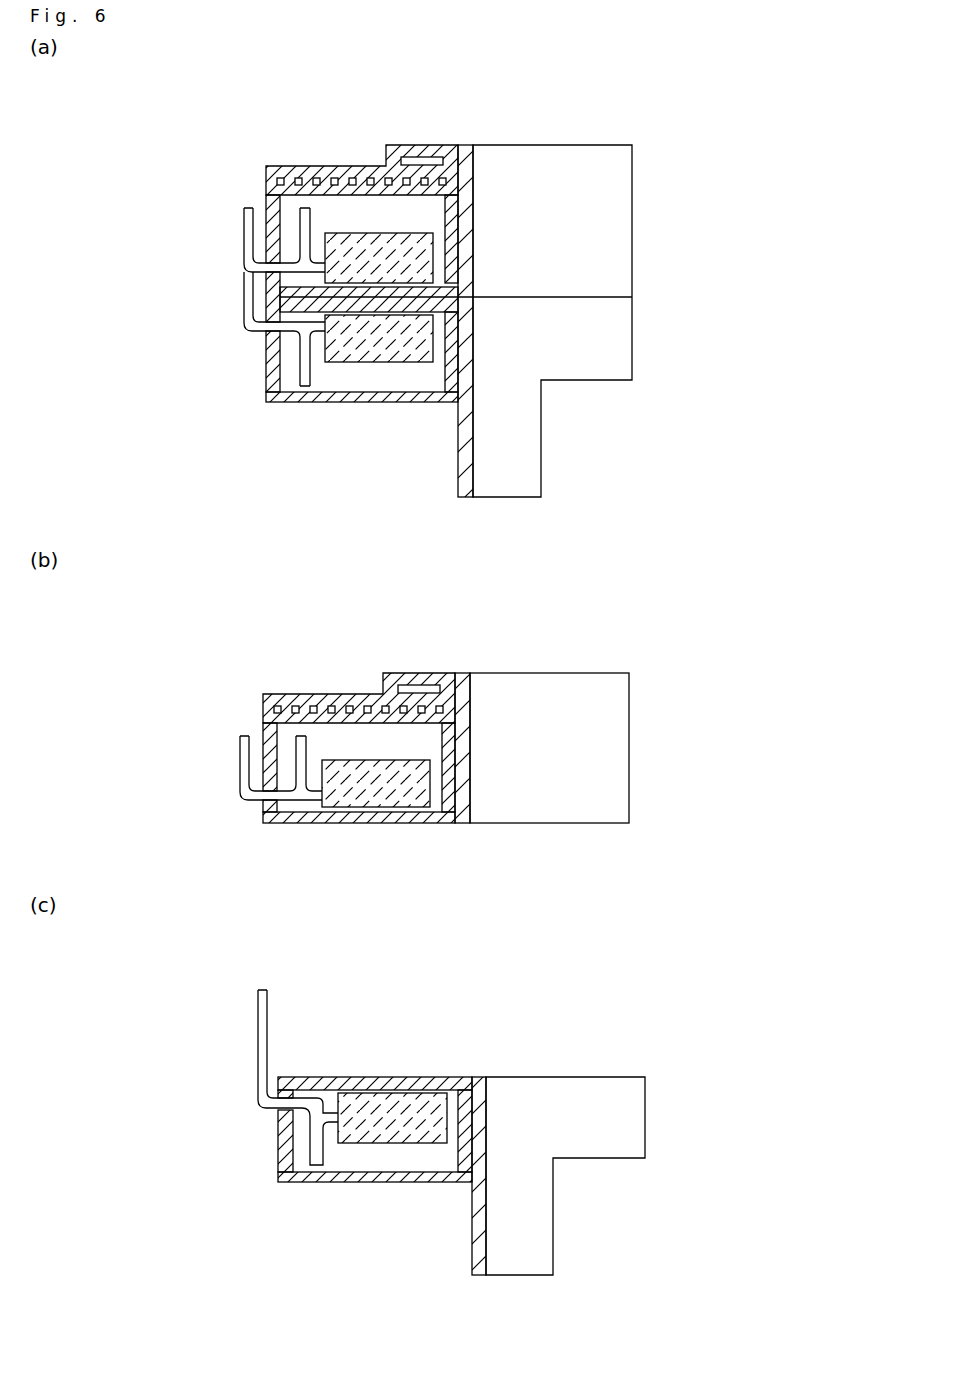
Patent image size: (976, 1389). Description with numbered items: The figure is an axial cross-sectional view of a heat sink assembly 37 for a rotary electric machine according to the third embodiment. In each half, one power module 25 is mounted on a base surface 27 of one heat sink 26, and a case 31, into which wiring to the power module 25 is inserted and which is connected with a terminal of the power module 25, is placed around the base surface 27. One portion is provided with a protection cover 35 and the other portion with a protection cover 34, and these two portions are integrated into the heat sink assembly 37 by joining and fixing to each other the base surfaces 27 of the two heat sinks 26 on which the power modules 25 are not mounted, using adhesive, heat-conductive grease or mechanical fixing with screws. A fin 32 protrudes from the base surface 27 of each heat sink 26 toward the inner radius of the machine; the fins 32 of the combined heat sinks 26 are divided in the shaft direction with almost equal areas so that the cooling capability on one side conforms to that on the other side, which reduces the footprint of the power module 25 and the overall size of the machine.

The power module 25 is at (368, 247).
The heat sink 26 is at (560, 145).
The base surface 27 is at (292, 272).
The case 31 is at (264, 206).
The fin 32 is at (593, 215).
The protection cover 34 is at (428, 403).
The protection cover 35 is at (310, 166).
The heat sink assembly 37 is at (464, 133).